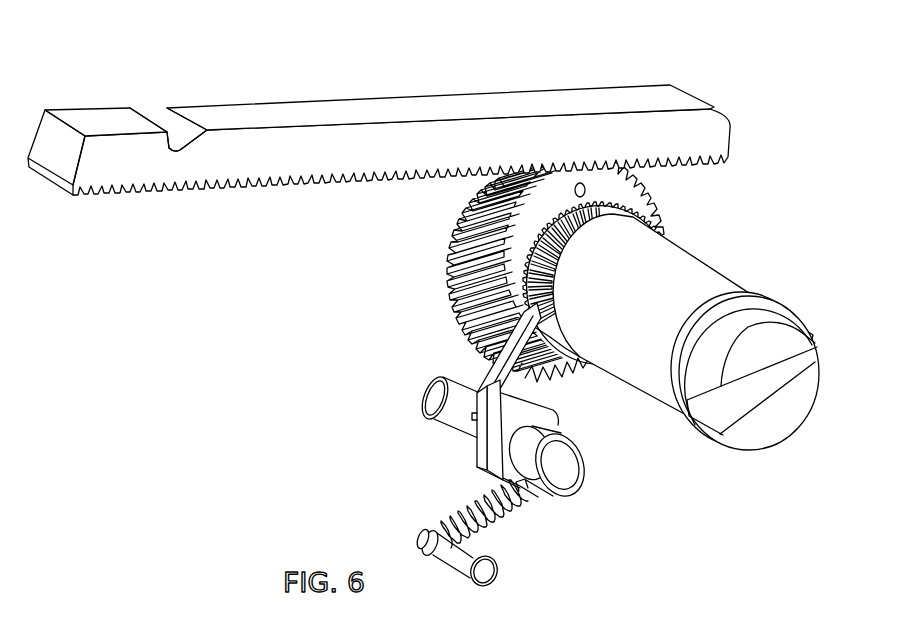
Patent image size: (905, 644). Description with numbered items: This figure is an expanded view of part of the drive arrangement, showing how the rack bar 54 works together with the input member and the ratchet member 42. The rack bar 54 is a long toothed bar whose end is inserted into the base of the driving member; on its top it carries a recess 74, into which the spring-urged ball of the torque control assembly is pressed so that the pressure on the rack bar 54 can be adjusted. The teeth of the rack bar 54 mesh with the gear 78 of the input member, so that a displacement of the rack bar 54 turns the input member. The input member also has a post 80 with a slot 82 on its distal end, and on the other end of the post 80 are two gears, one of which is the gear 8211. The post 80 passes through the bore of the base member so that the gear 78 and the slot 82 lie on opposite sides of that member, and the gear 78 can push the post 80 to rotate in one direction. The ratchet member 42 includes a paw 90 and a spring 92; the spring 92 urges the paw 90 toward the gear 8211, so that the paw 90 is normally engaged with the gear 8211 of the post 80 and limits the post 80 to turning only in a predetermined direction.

The rack bar 54 is at (379, 115).
The recess 74 is at (147, 110).
The gear 78 is at (443, 265).
The post 80 is at (700, 280).
The gear 8211 is at (660, 215).
The slot 82 is at (780, 388).
The ratchet member 42 is at (467, 446).
The paw 90 is at (477, 447).
The spring 92 is at (452, 496).